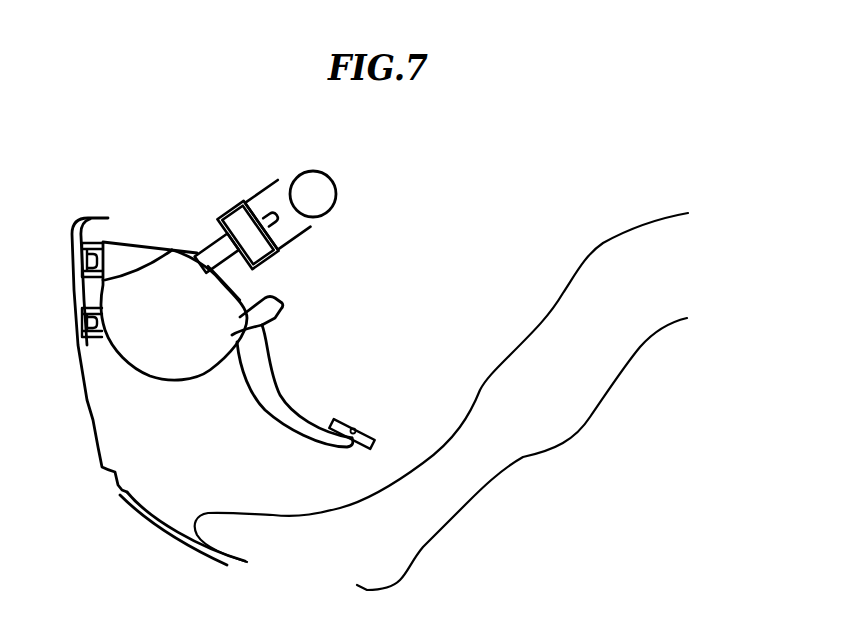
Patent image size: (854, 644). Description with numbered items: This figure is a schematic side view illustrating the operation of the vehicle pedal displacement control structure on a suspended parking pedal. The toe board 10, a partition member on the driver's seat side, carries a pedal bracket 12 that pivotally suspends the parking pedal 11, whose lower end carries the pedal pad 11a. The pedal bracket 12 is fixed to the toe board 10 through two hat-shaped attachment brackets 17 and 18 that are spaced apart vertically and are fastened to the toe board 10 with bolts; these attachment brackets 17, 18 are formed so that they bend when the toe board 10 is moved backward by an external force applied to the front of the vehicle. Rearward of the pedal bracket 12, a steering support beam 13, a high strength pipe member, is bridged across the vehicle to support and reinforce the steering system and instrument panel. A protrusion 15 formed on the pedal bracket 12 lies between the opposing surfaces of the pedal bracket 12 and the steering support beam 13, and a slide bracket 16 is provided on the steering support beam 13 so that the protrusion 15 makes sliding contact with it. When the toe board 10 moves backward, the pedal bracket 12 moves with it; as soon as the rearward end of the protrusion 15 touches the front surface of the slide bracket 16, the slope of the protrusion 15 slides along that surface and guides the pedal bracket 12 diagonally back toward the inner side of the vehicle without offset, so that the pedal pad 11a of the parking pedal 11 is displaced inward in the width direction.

The toe board 10 is at (95, 425).
The parking pedal 11 is at (278, 370).
The pedal pad 11a is at (354, 428).
The pedal bracket 12 is at (173, 358).
The steering support beam 13 is at (323, 190).
The protrusion 15 is at (217, 243).
The slide bracket 16 is at (239, 229).
The upper attachment bracket 17 is at (130, 242).
The lower attachment bracket 18 is at (95, 344).